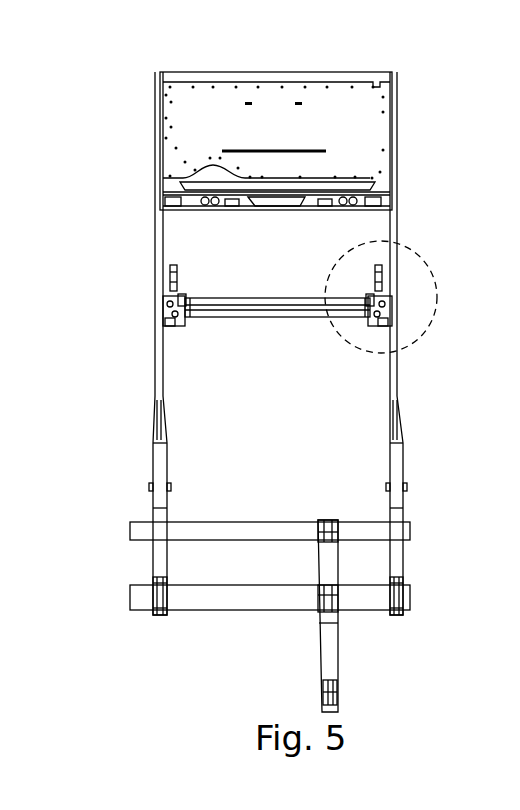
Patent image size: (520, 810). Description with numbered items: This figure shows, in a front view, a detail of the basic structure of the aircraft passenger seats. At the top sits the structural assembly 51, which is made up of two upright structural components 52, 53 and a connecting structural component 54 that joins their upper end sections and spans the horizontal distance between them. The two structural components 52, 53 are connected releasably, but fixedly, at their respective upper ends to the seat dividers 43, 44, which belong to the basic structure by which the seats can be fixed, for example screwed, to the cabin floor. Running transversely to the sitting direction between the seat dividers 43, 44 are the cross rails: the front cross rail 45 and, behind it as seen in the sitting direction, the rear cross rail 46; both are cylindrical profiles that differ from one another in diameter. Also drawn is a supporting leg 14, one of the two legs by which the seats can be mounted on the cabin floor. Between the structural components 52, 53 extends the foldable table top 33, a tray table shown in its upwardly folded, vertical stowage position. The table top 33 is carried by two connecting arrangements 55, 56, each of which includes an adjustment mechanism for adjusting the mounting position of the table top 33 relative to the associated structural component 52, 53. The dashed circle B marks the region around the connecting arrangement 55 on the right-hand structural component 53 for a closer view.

The supporting leg 14 is at (311, 660).
The foldable table top 33 is at (277, 290).
The seat divider 43 is at (158, 458).
The seat divider 44 is at (398, 458).
The front cross rail 45 is at (203, 595).
The rear cross rail 46 is at (267, 520).
The structural assembly 51 is at (408, 126).
The structural component 52 is at (153, 236).
The structural component 53 is at (397, 240).
The connecting structural component 54 is at (283, 72).
The connecting arrangement 55 is at (368, 338).
The connecting arrangement 56 is at (182, 340).
The detail region B is at (438, 297).